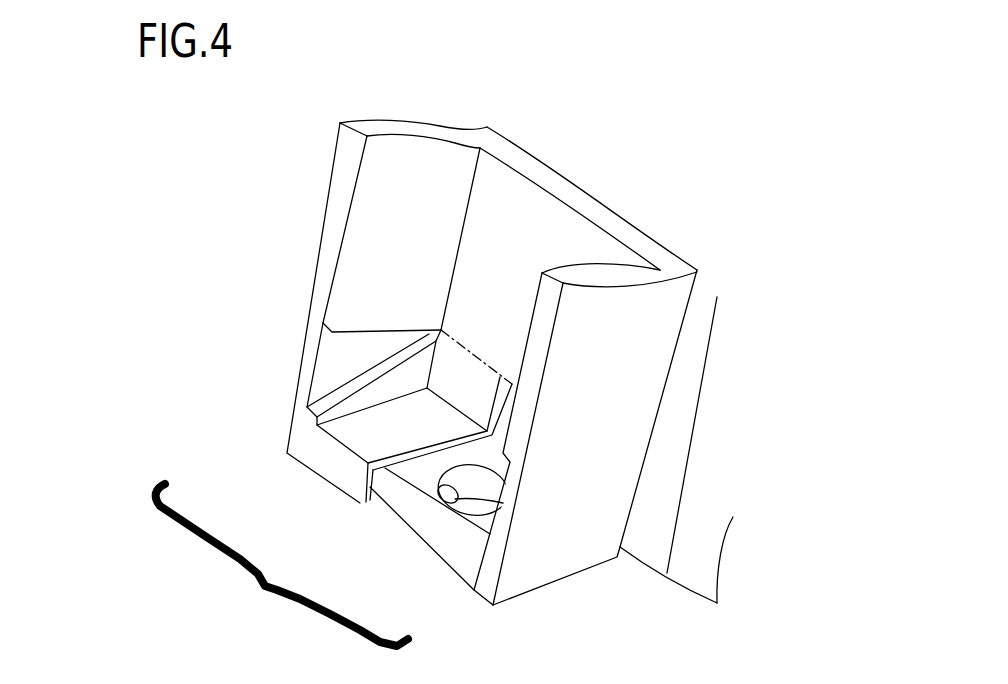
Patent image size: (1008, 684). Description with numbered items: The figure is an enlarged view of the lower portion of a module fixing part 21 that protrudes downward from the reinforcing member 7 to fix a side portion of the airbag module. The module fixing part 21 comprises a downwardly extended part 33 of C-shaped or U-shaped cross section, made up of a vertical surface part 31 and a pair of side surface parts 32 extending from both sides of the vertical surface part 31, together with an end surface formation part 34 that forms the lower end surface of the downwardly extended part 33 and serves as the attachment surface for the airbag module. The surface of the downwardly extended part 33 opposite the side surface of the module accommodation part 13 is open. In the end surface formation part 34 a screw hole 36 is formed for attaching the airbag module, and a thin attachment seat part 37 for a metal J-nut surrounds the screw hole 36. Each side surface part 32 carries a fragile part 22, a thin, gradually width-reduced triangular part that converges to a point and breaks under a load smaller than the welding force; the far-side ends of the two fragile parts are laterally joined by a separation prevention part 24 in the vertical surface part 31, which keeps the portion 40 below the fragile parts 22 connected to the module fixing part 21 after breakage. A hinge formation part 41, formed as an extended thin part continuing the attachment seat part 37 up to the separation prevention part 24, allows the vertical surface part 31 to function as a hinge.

The reinforcing member 7 is at (740, 142).
The module accommodation part 13 is at (682, 562).
The module fixing part 21 is at (153, 327).
The fragile part 22 is at (330, 363).
The separation prevention part 24 is at (441, 330).
The vertical surface part 31 is at (545, 141).
The side surface parts 32 is at (413, 107).
The downwardly extended part 33 is at (702, 127).
The end surface formation part 34 is at (307, 455).
The screw hole 36 is at (440, 488).
The attachment seat part 37 is at (460, 518).
The portion below the fragile part 40 is at (282, 565).
The hinge formation part 41 is at (501, 377).